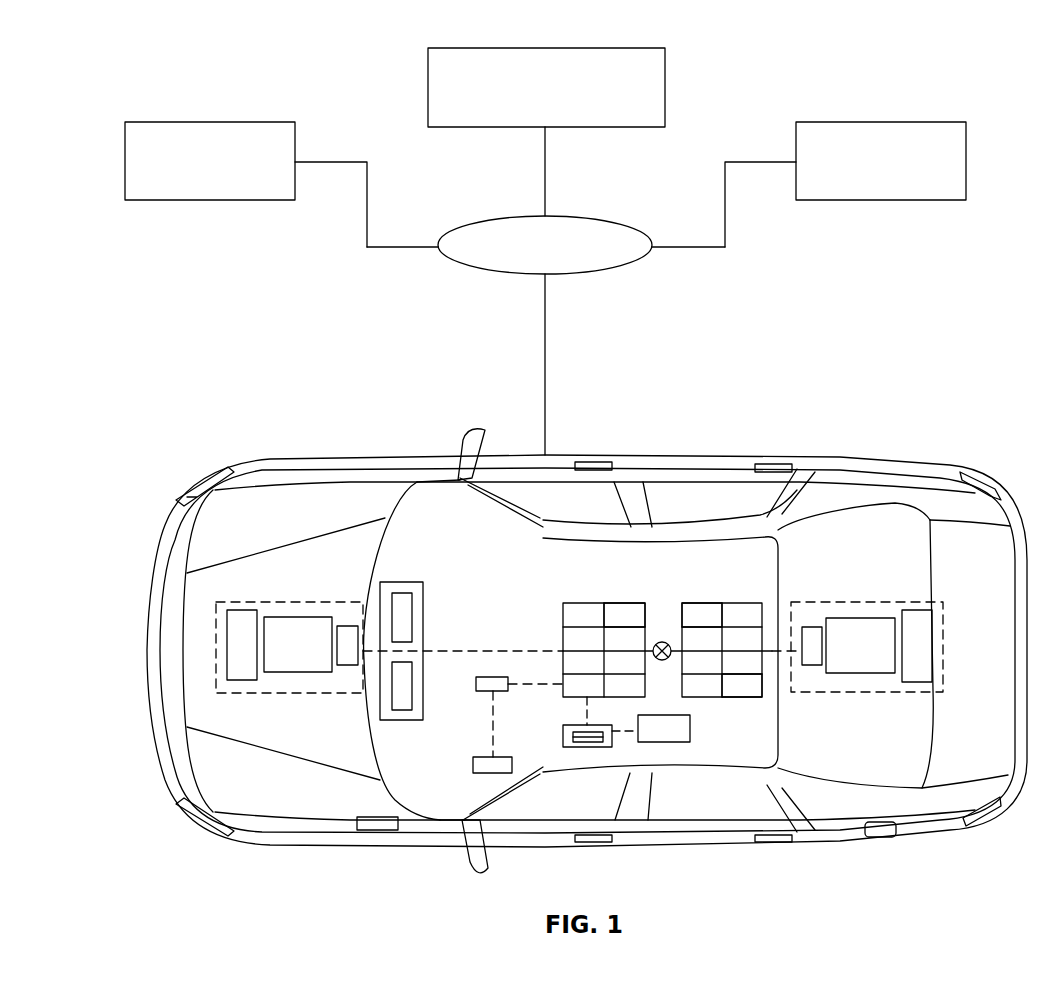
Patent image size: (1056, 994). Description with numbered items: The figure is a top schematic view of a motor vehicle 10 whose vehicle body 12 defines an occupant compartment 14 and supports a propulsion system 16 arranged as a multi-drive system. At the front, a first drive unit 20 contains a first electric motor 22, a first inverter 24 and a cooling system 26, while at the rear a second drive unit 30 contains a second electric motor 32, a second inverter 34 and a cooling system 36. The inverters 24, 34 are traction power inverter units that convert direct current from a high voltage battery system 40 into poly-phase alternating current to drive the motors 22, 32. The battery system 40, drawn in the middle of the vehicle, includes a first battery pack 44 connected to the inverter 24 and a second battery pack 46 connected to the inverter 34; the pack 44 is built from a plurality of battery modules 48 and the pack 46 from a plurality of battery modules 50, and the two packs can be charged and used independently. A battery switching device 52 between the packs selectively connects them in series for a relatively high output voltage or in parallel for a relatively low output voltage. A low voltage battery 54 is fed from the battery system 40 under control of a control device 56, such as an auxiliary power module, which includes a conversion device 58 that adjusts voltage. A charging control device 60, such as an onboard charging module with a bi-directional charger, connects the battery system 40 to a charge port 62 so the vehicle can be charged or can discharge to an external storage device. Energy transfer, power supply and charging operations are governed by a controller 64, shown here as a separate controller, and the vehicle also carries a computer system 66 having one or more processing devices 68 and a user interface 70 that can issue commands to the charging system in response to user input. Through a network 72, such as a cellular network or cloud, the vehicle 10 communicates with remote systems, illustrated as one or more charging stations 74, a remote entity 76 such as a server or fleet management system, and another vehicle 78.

The motor vehicle 10 is at (136, 376).
The vehicle body 12 is at (634, 448).
The occupant compartment 14 is at (675, 762).
The propulsion system 16 is at (272, 726).
The first drive unit 20 is at (287, 600).
The first electric motor 22 is at (302, 617).
The first inverter 24 is at (347, 665).
The cooling system 26 is at (240, 680).
The second drive unit 30 is at (890, 602).
The second electric motor 32 is at (848, 633).
The second inverter 34 is at (812, 665).
The cooling system 36 is at (918, 682).
The high voltage battery system 40 is at (765, 590).
The first battery pack 44 is at (620, 605).
The second battery pack 46 is at (748, 697).
The battery modules 48 is at (628, 613).
The battery modules 50 is at (700, 615).
The battery switching device 52 is at (662, 642).
The low voltage battery 54 is at (690, 728).
The control device 56 is at (583, 730).
The conversion device 58 is at (587, 747).
The charging control device 60 is at (473, 765).
The charge port 62 is at (377, 817).
The controller 64 is at (476, 684).
The computer system 66 is at (398, 560).
The processing devices 68 is at (412, 612).
The user interface 70 is at (412, 700).
The network 72 is at (562, 259).
The charging stations 74 is at (172, 122).
The remote entity 76 is at (620, 48).
The another vehicle 78 is at (918, 122).